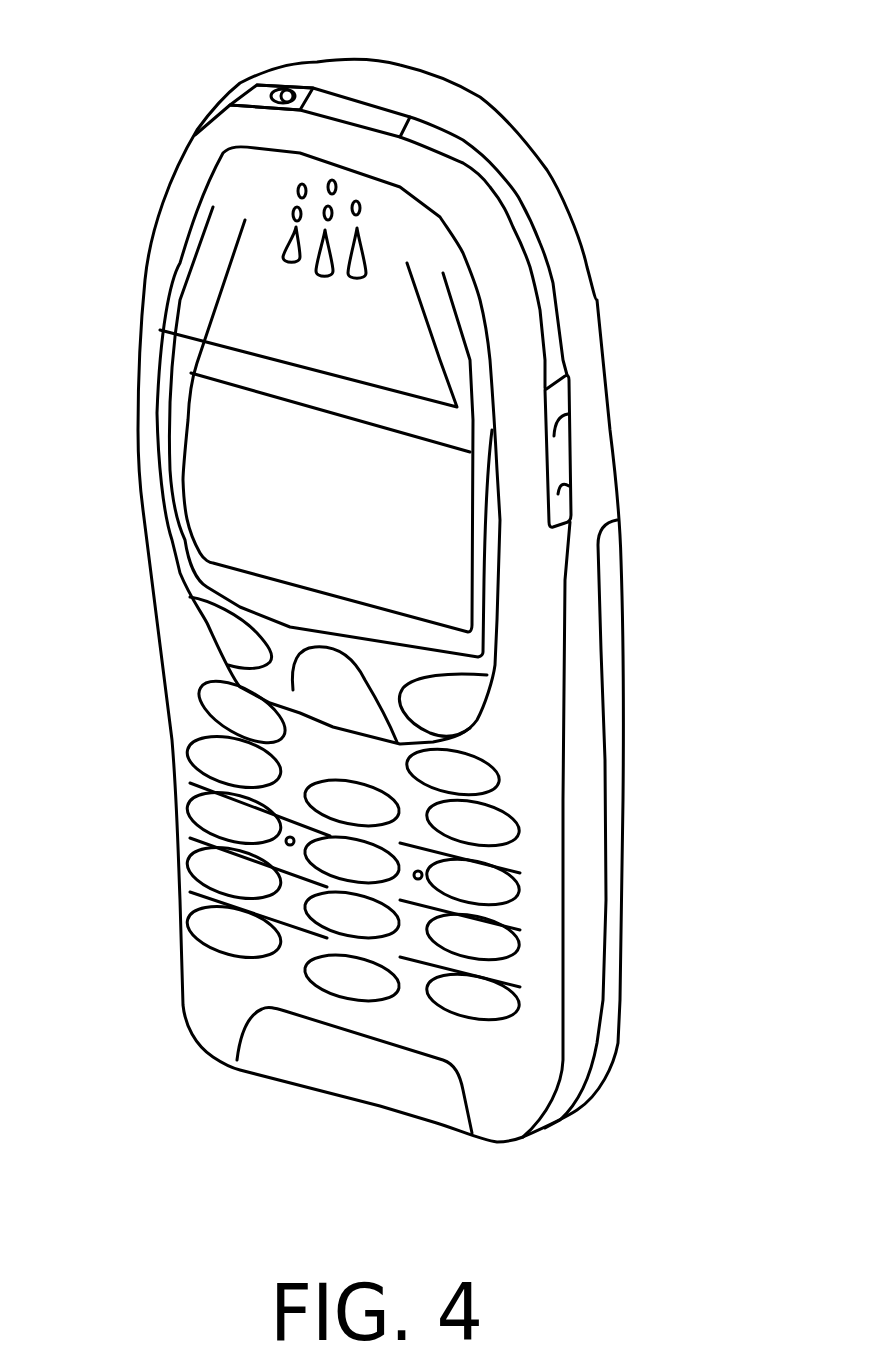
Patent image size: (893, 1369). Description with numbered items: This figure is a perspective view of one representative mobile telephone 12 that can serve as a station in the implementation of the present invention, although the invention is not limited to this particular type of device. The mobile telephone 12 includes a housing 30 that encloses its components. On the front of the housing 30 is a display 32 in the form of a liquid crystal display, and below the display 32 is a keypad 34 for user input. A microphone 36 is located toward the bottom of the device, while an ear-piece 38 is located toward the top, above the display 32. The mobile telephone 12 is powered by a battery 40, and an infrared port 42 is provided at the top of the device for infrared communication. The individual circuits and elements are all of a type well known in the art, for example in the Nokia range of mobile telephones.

The mobile telephone 12 is at (536, 78).
The housing 30 is at (576, 283).
The display 32 is at (438, 560).
The keypad 34 is at (470, 1007).
The microphone 36 is at (273, 1057).
The ear-piece 38 is at (317, 222).
The battery 40 is at (612, 978).
The infrared port 42 is at (358, 103).